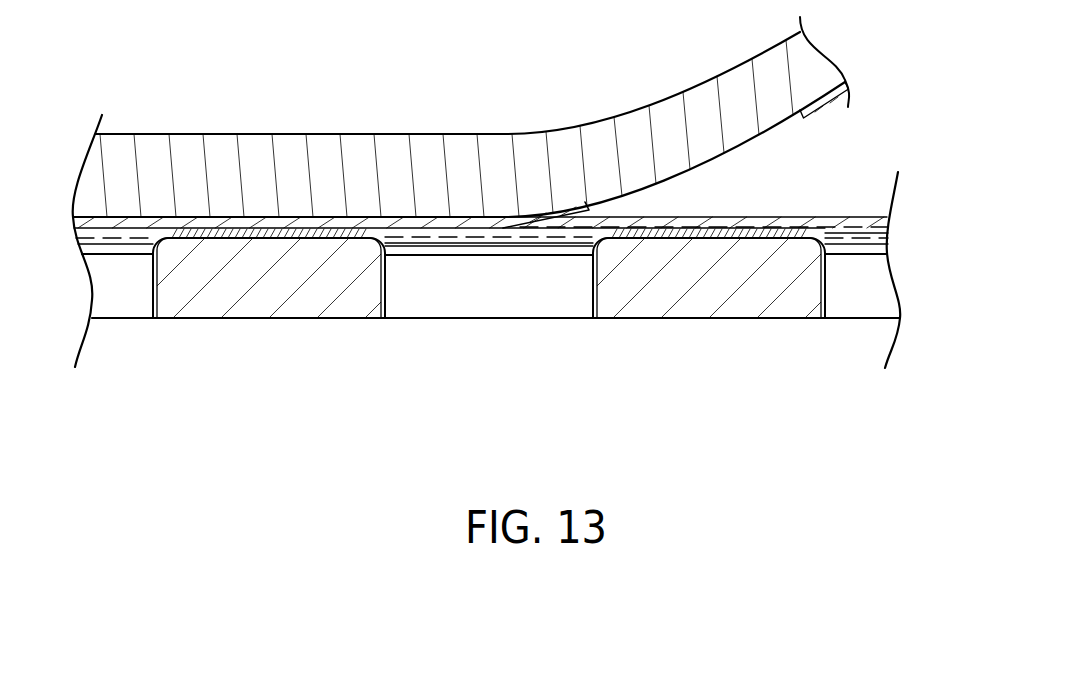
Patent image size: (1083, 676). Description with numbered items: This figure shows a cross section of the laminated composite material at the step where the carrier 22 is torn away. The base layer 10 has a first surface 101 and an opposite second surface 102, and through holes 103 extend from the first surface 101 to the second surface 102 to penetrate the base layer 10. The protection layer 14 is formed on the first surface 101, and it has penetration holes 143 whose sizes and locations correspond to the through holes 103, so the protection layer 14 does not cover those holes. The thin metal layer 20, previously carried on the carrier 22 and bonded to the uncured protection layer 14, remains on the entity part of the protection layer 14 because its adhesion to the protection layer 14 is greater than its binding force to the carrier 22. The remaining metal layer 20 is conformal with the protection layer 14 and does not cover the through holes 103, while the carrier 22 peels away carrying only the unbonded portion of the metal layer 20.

The base layer 10 is at (898, 242).
The protection layer 14 is at (633, 235).
The metal layer 20 is at (710, 225).
The carrier 22 is at (795, 53).
The first surface 101 is at (465, 237).
The second surface 102 is at (553, 318).
The through holes 103 is at (438, 302).
The penetration holes 143 is at (408, 240).